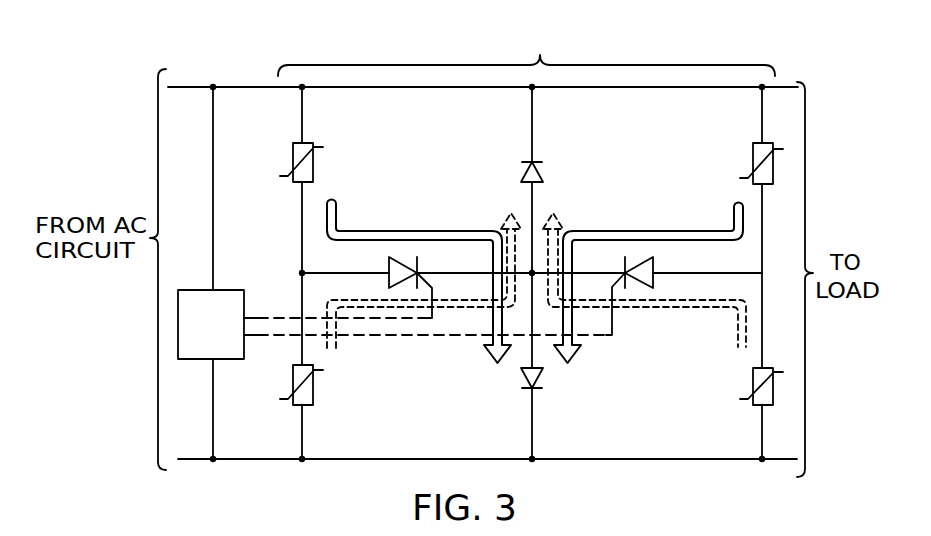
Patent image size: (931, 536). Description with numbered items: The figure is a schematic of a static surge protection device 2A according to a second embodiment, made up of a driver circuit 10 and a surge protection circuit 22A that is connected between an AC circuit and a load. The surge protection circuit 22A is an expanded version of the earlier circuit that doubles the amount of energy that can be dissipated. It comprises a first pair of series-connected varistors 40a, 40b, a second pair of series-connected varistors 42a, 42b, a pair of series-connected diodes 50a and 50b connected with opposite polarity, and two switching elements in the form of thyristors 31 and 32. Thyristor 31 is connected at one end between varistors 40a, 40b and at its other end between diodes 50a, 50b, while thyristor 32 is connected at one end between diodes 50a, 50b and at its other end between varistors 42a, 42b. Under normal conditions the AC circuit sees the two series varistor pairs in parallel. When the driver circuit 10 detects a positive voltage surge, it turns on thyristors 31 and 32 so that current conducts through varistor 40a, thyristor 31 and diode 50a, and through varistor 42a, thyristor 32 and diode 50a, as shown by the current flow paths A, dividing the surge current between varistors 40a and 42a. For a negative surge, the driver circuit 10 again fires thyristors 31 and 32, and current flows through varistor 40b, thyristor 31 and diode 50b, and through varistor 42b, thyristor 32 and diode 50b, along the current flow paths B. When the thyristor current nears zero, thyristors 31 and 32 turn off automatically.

The static surge protection device 2A is at (226, 47).
The surge protection circuit 22A is at (545, 58).
The driver circuit 10 is at (227, 296).
The thyristor 31 is at (390, 263).
The thyristor 32 is at (650, 268).
The varistor 40a is at (295, 157).
The varistor 40b is at (310, 395).
The varistor 42a is at (754, 153).
The varistor 42b is at (755, 377).
The diode 50a is at (541, 375).
The diode 50b is at (541, 175).
The current flow paths A is at (410, 230).
The current flow paths B is at (455, 307).